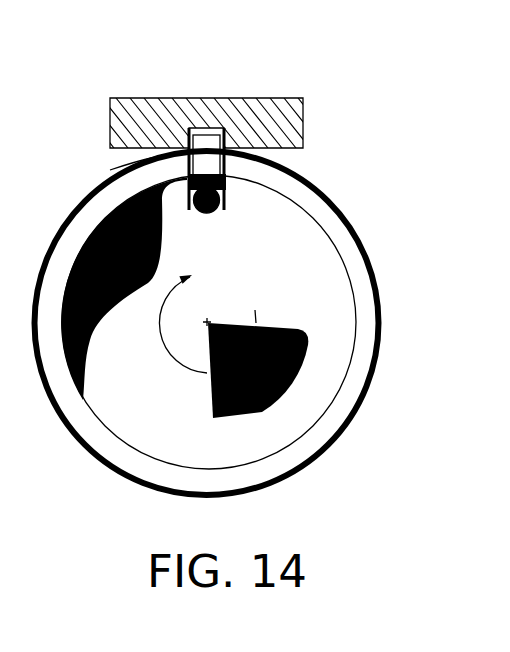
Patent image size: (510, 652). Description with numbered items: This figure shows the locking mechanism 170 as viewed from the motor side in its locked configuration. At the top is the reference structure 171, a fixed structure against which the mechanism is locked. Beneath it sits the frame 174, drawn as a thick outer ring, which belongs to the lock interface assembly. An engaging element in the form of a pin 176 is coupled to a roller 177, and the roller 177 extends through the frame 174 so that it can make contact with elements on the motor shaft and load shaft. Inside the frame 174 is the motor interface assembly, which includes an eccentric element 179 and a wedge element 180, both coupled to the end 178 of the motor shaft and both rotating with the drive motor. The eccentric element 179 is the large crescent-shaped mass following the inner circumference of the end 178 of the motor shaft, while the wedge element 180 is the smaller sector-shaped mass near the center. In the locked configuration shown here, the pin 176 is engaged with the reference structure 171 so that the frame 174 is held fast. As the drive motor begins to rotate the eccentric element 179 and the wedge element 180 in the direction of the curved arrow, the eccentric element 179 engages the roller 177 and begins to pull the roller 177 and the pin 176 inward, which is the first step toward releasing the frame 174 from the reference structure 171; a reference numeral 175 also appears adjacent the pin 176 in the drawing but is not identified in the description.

The locking mechanism 170 is at (97, 57).
The reference structure 171 is at (303, 113).
The frame 174 is at (375, 275).
The plunger 175 is at (226, 160).
The engaging element 176 is at (203, 163).
The roller 177 is at (215, 212).
The end of the motor shaft 178 is at (191, 468).
The eccentric element 179 is at (88, 350).
The wedge element 180 is at (277, 328).